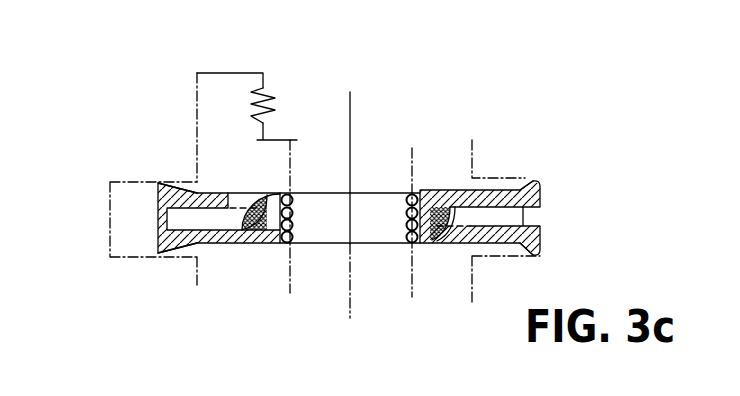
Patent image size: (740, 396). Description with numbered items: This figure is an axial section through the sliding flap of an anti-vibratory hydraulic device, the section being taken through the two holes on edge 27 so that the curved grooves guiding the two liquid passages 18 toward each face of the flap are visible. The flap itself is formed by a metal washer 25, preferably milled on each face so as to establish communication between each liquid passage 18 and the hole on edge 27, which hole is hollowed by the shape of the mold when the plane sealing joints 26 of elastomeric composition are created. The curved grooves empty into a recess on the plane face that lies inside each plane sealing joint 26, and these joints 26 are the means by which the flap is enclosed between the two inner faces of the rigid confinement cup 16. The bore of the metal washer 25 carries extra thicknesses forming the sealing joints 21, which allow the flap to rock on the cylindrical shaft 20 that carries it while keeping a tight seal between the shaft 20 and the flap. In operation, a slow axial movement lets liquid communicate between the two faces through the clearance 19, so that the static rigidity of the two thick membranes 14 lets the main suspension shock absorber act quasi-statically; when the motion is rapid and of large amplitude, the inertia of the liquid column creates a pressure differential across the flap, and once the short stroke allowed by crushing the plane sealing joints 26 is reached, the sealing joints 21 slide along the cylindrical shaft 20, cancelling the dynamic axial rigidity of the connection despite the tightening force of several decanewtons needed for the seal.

The thick membranes 14 is at (277, 94).
The rigid confinement cup 16 is at (477, 166).
The liquid passage 18 is at (225, 218).
The clearance 19 is at (125, 210).
The cylindrical shaft 20 is at (415, 274).
The sealing joints 21 is at (301, 223).
The metal washer 25 is at (270, 206).
The plane sealing joints 26 is at (164, 177).
The hole on edge 27 is at (543, 225).